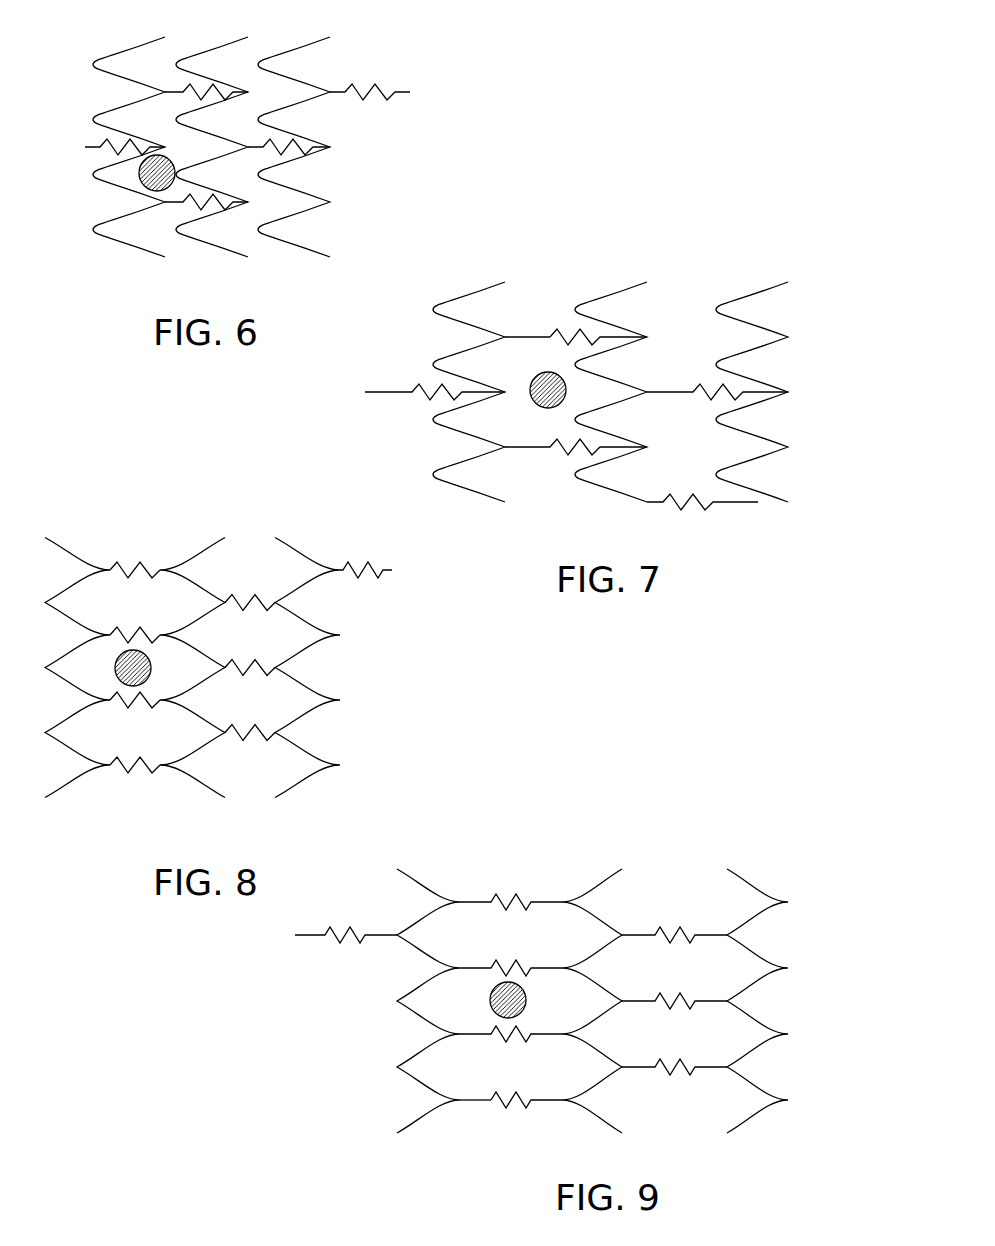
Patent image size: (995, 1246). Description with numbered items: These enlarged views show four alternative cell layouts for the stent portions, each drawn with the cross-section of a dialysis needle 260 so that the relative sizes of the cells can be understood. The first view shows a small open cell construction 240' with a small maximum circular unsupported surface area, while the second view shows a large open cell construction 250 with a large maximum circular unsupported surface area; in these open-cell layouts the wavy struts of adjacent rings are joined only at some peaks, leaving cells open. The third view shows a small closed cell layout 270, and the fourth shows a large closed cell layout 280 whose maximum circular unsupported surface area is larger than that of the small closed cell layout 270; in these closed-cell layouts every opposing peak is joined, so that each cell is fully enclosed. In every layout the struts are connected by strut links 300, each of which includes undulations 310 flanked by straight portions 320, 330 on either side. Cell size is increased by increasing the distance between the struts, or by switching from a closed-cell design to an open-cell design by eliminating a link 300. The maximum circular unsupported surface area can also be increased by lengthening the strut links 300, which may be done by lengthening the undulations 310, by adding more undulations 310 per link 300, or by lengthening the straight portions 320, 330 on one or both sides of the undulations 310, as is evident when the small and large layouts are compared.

In FIG. 6, the small open cell construction 240' is at (220, 176).
In FIG. 7, the large open cell construction 250 is at (682, 270).
In FIG. 6, the dialysis needle 260 is at (140, 180).
In FIG. 7, the dialysis needle 260 is at (549, 408).
In FIG. 8, the dialysis needle 260 is at (151, 668).
In FIG. 9, the dialysis needle 260 is at (527, 1001).
In FIG. 8, the small closed cell layout 270 is at (356, 654).
In FIG. 9, the large closed cell layout 280 is at (685, 875).
In FIG. 6, the strut link 300 is at (175, 210).
In FIG. 7, the strut link 300 is at (681, 372).
In FIG. 8, the strut link 300 is at (267, 742).
In FIG. 9, the strut link 300 is at (377, 942).
In FIG. 6, the undulation 310 is at (315, 155).
In FIG. 7, the undulation 310 is at (575, 334).
In FIG. 8, the undulation 310 is at (139, 565).
In FIG. 9, the undulation 310 is at (514, 900).
In FIG. 7, the straight portion 320 is at (532, 336).
In FIG. 9, the straight portion 320 is at (472, 1103).
In FIG. 7, the straight portion 330 is at (727, 504).
In FIG. 9, the straight portion 330 is at (548, 1103).